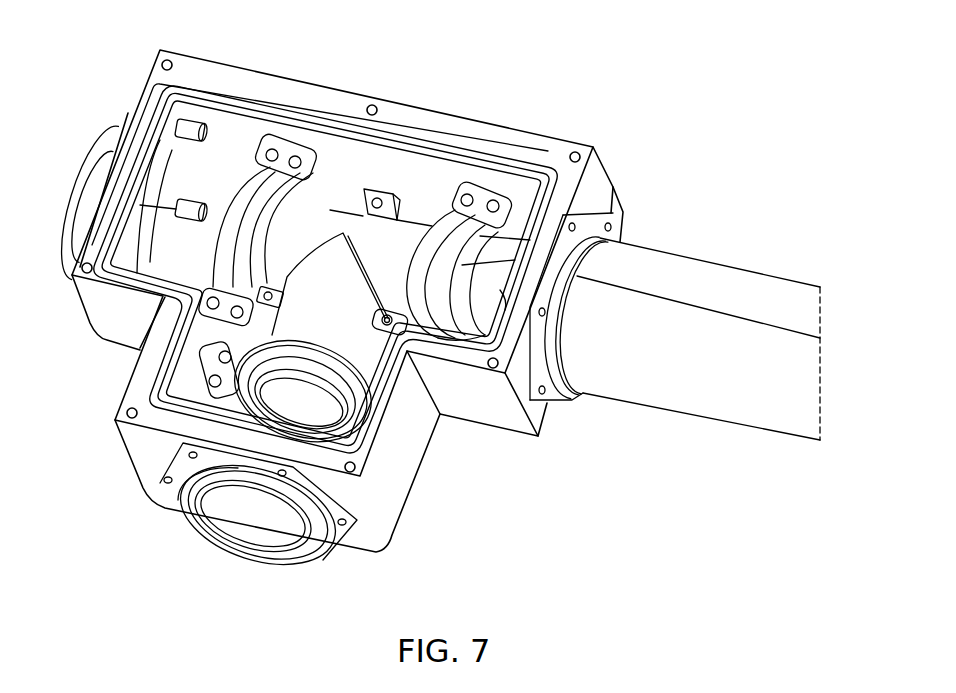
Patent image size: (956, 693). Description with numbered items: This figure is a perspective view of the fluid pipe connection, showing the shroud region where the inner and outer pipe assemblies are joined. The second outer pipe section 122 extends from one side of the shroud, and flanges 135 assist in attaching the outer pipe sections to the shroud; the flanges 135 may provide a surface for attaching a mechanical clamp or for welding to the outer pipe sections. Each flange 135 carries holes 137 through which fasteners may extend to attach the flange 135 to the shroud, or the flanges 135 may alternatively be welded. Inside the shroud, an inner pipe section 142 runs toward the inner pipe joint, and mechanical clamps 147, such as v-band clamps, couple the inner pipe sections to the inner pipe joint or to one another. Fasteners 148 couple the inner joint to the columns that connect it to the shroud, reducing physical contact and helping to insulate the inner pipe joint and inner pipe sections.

The second outer pipe section 122 is at (710, 283).
The flange 135 is at (98, 150).
The hole 137 is at (150, 487).
The inner pipe section 142 is at (503, 243).
The mechanical clamp 147 is at (255, 162).
The fastener 148 is at (378, 193).